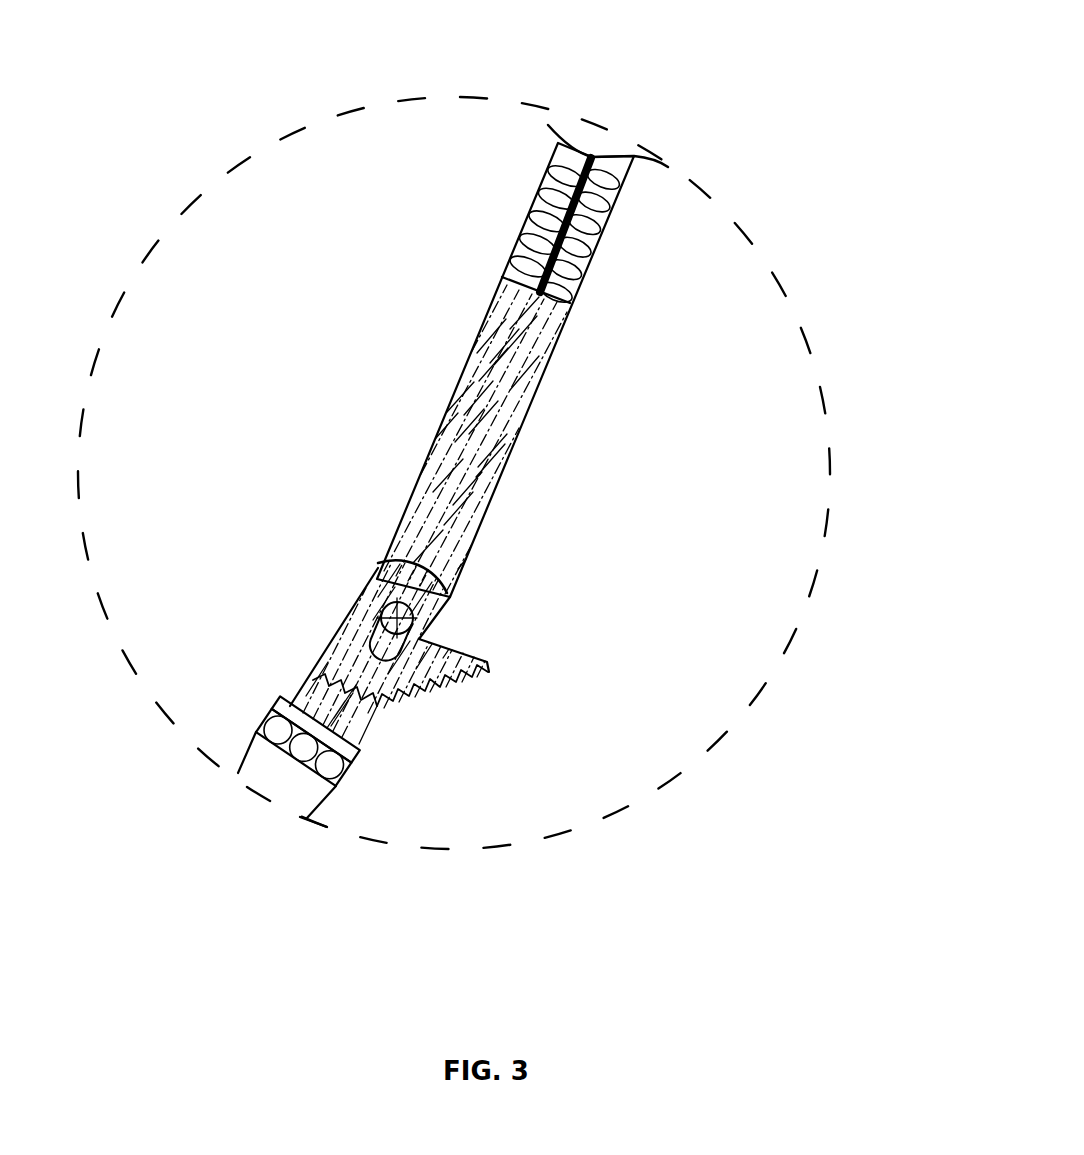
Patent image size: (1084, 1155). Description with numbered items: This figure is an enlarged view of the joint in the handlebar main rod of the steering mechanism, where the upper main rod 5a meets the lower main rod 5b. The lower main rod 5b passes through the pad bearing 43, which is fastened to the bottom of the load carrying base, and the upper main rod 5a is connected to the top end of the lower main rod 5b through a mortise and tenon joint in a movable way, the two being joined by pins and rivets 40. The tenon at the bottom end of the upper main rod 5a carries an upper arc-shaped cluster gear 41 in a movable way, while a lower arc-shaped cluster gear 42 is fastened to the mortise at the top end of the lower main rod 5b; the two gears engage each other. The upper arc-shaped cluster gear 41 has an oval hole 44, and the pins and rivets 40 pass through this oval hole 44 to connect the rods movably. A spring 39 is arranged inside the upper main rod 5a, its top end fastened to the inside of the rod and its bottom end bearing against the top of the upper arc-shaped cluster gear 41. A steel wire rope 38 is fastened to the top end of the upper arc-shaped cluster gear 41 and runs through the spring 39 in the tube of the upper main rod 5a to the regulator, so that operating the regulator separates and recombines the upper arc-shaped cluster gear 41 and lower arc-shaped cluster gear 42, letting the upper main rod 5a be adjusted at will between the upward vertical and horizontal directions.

The steel wire rope 38 is at (637, 155).
The spring 39 is at (588, 260).
The upper main rod 5a is at (523, 427).
The pins and rivets 40 is at (450, 596).
The upper arc-shaped cluster gear 41 is at (428, 646).
The lower arc-shaped cluster gear 42 is at (343, 729).
The pad bearing 43 is at (325, 768).
The lower main rod 5b is at (275, 785).
The oval hole 44 is at (385, 612).